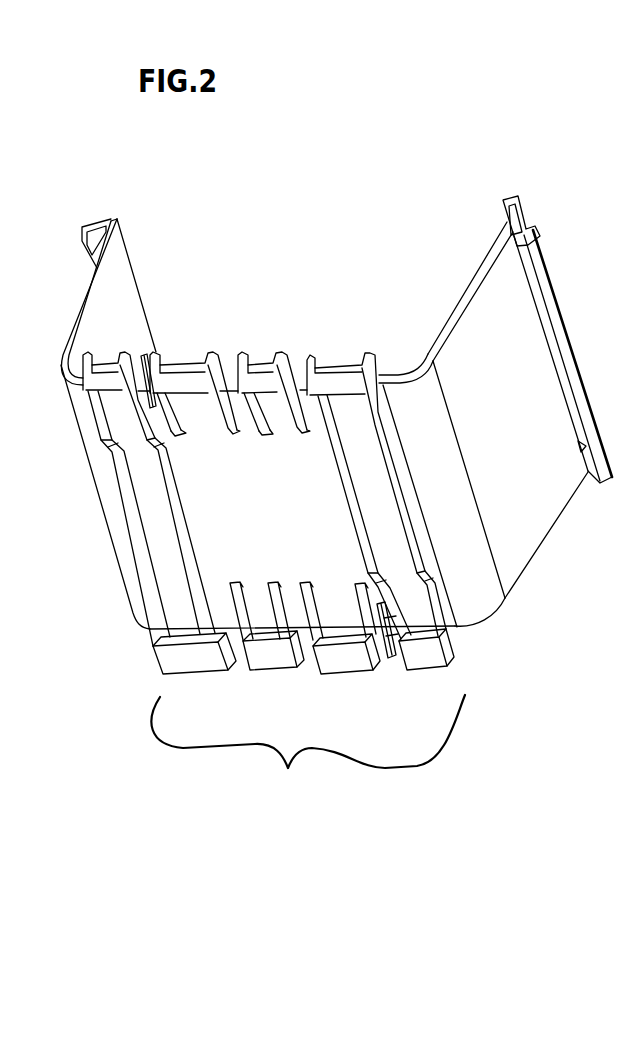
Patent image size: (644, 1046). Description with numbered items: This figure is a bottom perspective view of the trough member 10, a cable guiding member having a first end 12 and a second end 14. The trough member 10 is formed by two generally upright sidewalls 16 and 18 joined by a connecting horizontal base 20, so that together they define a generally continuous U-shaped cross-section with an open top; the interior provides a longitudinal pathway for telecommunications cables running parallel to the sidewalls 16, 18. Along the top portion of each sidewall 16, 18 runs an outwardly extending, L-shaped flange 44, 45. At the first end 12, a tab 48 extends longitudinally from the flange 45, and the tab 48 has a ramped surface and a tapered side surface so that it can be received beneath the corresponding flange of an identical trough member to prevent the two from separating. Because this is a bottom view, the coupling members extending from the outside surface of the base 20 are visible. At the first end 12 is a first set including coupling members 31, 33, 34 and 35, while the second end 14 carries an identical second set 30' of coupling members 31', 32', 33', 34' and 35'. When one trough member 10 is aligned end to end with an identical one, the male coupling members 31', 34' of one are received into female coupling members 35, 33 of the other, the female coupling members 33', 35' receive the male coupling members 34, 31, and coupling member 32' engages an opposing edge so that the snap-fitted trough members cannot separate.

The trough member 10 is at (266, 247).
The end 12 is at (401, 372).
The end 14 is at (478, 622).
The sidewall 16 is at (113, 288).
The sidewall 18 is at (535, 522).
The base 20 is at (283, 525).
The second set of coupling members 30' is at (308, 749).
The coupling member 31 is at (124, 499).
The coupling member 33 is at (195, 363).
The coupling member 34 is at (274, 363).
The coupling member 35 is at (376, 463).
The coupling member 31' is at (426, 684).
The coupling member 32' is at (378, 673).
The coupling member 33' is at (340, 662).
The coupling member 34' is at (267, 661).
The coupling member 35' is at (194, 687).
The L-shaped flange 44 is at (92, 222).
The L-shaped flange 45 is at (573, 353).
The tab 48 is at (525, 211).